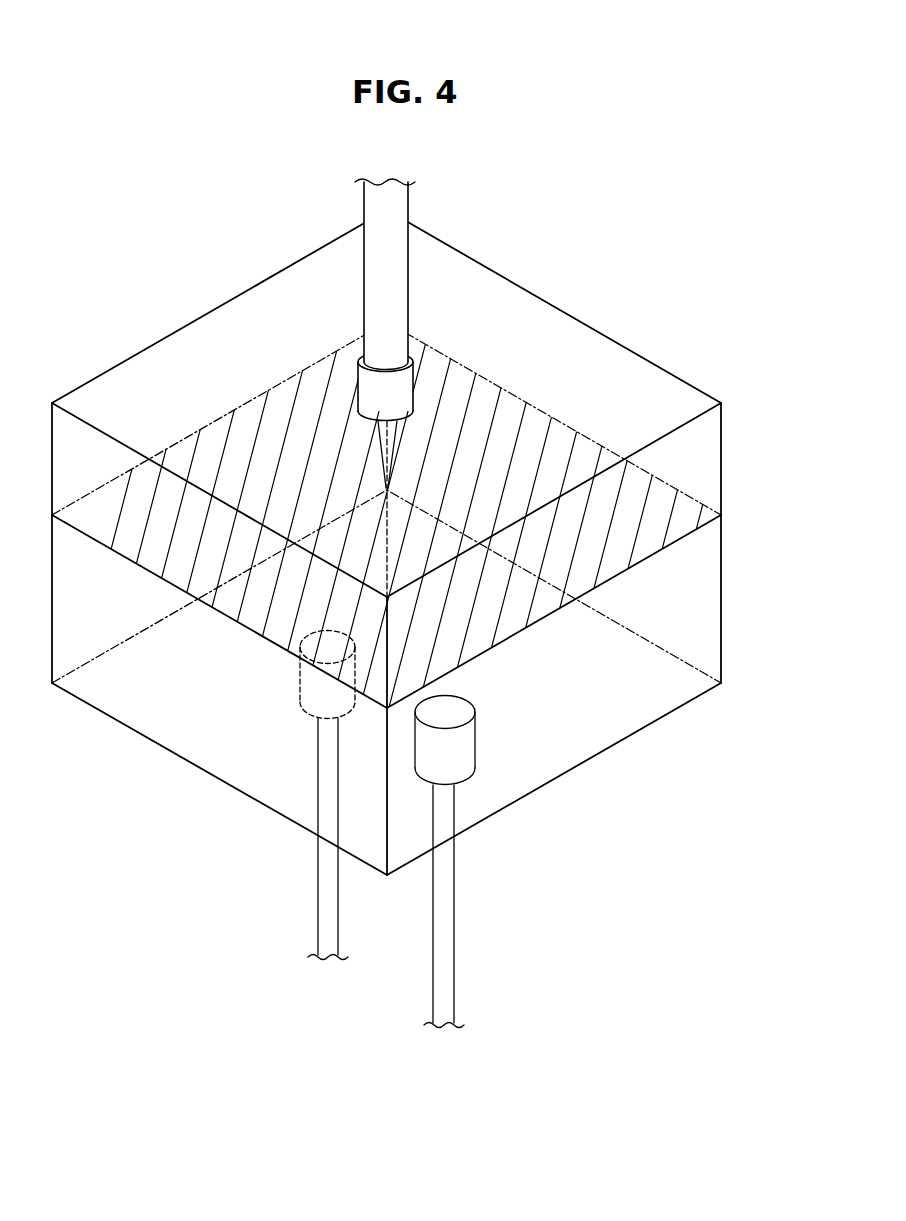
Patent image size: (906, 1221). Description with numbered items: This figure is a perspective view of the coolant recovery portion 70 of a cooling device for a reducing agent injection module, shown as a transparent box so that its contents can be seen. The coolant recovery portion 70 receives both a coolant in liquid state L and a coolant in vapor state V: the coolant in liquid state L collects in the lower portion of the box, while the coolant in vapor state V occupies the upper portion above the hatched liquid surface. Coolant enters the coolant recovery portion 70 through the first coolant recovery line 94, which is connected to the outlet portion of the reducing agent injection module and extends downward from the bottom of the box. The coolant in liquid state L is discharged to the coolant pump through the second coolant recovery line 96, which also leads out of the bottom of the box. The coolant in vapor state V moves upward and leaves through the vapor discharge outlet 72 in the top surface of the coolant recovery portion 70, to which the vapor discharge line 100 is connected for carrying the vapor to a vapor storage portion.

The coolant recovery portion 70 is at (169, 297).
The vapor discharge outlet 72 is at (400, 387).
The vapor discharge line 100 is at (395, 200).
The first coolant recovery line 94 is at (443, 947).
The second coolant recovery line 96 is at (327, 901).
The coolant in vapor state V is at (688, 462).
The coolant in liquid state L is at (688, 596).